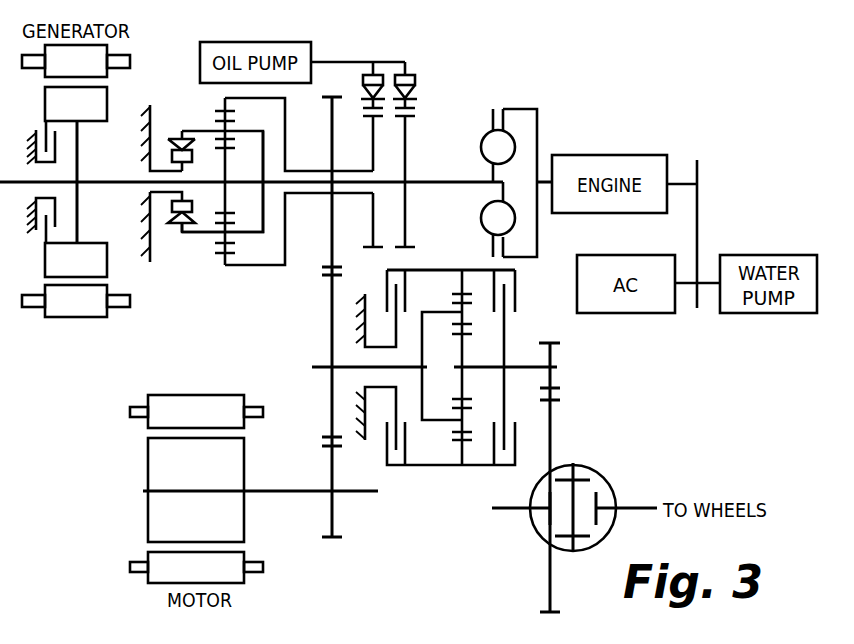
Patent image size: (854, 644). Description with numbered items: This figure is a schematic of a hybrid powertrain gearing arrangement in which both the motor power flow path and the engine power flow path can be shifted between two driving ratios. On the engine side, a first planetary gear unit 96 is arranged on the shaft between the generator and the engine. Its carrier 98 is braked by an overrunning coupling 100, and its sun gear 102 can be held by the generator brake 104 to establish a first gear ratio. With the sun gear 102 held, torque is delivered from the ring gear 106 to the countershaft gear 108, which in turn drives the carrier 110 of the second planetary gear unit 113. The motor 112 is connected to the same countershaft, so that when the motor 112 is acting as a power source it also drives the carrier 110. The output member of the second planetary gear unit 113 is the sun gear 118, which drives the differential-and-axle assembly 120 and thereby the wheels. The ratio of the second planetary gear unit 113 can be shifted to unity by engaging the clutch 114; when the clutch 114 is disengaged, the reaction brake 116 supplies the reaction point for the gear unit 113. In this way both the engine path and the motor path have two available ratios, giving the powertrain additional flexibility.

The first planetary gear unit 96 is at (192, 130).
The carrier 98 is at (205, 232).
The overrunning coupling 100 is at (172, 203).
The sun gear 102 is at (228, 168).
The generator brake 104 is at (55, 151).
The ring gear 106 is at (267, 98).
The countershaft gear 108 is at (332, 317).
The carrier 110 is at (433, 422).
The motor 112 is at (160, 513).
The second planetary gear unit 113 is at (415, 466).
The clutch 114 is at (515, 297).
The reaction brake 116 is at (398, 304).
The sun gear 118 is at (465, 354).
The differential-and-axle assembly 120 is at (605, 480).